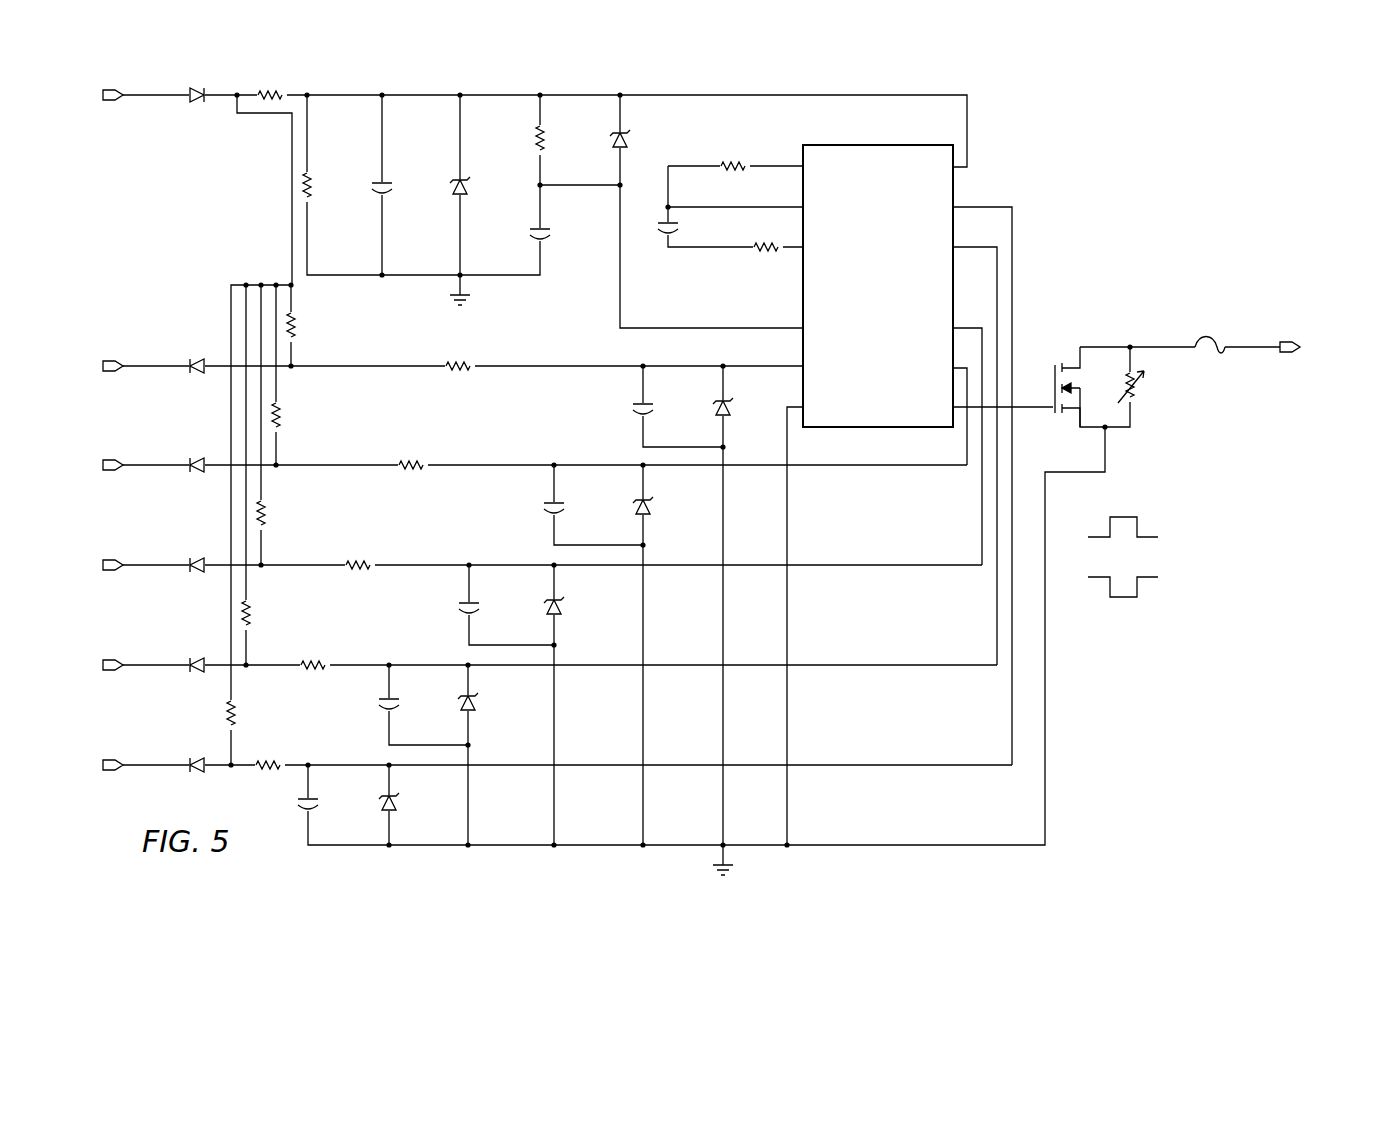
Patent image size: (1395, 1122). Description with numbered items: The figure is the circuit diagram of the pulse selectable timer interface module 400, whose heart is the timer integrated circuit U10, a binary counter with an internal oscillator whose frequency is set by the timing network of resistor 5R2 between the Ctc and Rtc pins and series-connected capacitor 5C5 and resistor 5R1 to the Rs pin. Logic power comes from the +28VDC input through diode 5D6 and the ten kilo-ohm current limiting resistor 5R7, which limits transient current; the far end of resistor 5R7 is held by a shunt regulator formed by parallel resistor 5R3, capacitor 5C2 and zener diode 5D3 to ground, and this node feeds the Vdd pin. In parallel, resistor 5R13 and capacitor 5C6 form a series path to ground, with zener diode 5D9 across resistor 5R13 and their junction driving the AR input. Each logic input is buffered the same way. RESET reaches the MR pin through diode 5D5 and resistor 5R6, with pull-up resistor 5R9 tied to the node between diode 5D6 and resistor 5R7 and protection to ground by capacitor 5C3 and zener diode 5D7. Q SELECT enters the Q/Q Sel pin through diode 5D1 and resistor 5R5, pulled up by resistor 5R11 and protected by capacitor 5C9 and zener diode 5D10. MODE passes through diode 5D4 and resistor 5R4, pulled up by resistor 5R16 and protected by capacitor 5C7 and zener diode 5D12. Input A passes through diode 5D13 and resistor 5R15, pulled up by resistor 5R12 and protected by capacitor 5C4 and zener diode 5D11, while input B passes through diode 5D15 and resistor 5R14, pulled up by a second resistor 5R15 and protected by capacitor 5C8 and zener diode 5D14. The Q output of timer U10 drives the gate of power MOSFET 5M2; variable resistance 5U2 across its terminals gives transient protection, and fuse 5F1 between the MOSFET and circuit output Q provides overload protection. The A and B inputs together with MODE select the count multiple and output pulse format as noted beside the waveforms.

The pulse selectable timer interface module 400 is at (708, 471).
The diode 5D6 is at (197, 85).
The current limiting resistor 5R7 is at (272, 84).
The resistor 5R3 is at (326, 187).
The capacitor 5C2 is at (399, 187).
The zener diode 5D3 is at (479, 187).
The resistor 5R13 is at (564, 140).
The zener diode 5D9 is at (639, 141).
The capacitor 5C6 is at (558, 234).
The resistor 5R2 is at (736, 156).
The capacitor 5C5 is at (687, 227).
The resistor 5R1 is at (766, 237).
The timer integrated circuit U10 is at (878, 286).
The pull-up resistor 5R9 is at (310, 327).
The resistor 5R6 is at (460, 354).
The capacitor 5C3 is at (662, 408).
The zener diode 5D7 is at (743, 408).
The pull-up resistor 5R11 is at (300, 417).
The resistor 5R5 is at (414, 453).
The capacitor 5C9 is at (573, 507).
The zener diode 5D10 is at (668, 507).
The pull-up resistor 5R16 is at (285, 515).
The resistor 5R4 is at (361, 553).
The capacitor 5C7 is at (488, 607).
The zener diode 5D12 is at (579, 607).
The pull-up resistor 5R12 is at (270, 615).
The resistor 5R15 is at (282, 683).
The capacitor 5C4 is at (408, 704).
The zener diode 5D11 is at (494, 703).
The resistor 5R14 is at (272, 753).
The capacitor 5C8 is at (327, 804).
The zener diode 5D14 is at (414, 803).
The diode 5D5 is at (197, 356).
The diode 5D1 is at (197, 454).
The diode 5D4 is at (197, 554).
The diode 5D13 is at (197, 654).
The diode 5D15 is at (197, 754).
The power MOSFET 5M2 is at (1056, 383).
The variable resistance 5U2 is at (1148, 387).
The fuse 5F1 is at (1210, 334).